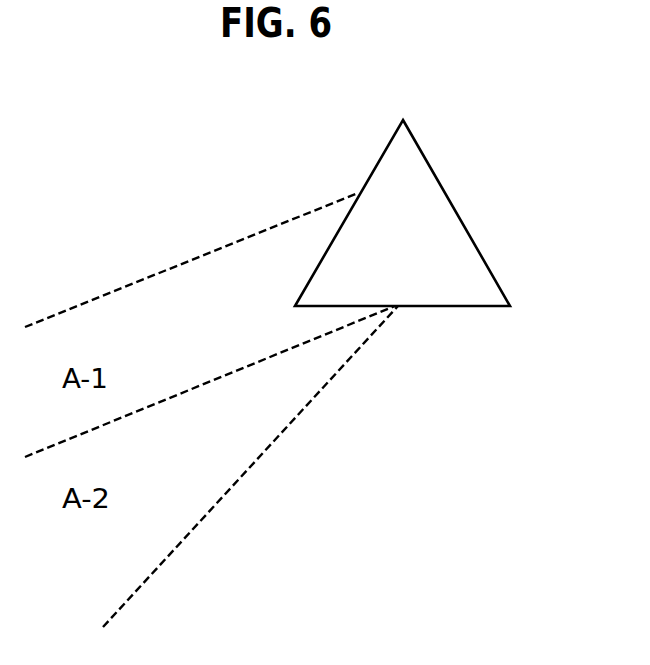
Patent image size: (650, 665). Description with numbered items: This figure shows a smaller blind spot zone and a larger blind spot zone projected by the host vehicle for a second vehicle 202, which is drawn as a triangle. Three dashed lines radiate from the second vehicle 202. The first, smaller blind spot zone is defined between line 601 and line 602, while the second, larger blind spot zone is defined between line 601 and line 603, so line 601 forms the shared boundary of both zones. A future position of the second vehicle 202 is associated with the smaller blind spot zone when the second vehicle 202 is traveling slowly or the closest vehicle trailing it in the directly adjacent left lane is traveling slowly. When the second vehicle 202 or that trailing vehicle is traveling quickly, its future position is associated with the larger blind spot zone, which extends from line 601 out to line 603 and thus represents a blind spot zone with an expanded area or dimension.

The second vehicle 202 is at (423, 217).
The line 601 is at (263, 230).
The line 602 is at (265, 360).
The line 603 is at (257, 464).